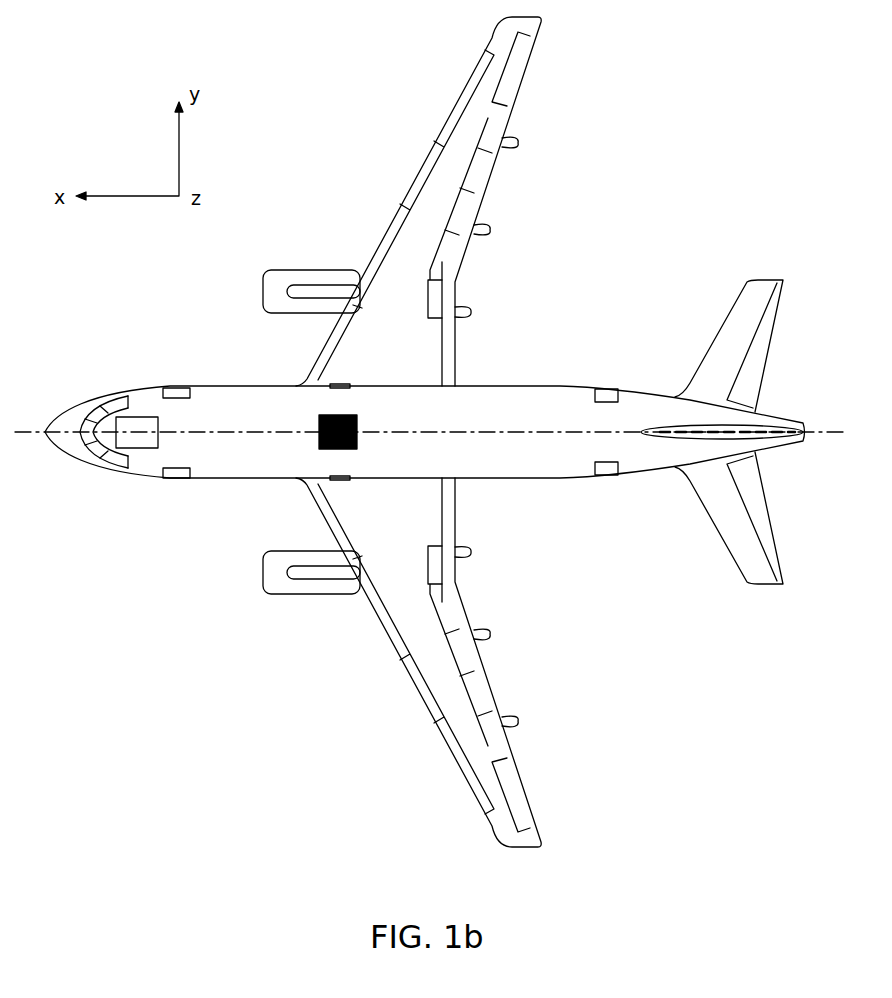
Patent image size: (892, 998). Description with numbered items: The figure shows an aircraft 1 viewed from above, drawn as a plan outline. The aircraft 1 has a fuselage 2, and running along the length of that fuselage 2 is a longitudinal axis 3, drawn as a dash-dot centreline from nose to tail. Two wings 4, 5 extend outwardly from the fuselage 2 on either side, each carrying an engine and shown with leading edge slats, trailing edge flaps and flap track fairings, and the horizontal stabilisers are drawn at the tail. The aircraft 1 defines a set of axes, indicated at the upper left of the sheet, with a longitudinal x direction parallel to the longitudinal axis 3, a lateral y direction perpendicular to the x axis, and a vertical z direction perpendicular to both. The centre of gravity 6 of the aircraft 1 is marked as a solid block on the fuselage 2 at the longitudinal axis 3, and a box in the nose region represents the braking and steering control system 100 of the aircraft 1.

The aircraft 1 is at (604, 228).
The fuselage 2 is at (183, 449).
The longitudinal axis 3 is at (488, 433).
The wing 4 is at (487, 773).
The wing 5 is at (468, 125).
The centre of gravity 6 is at (318, 443).
The braking and steering control system 100 is at (132, 428).